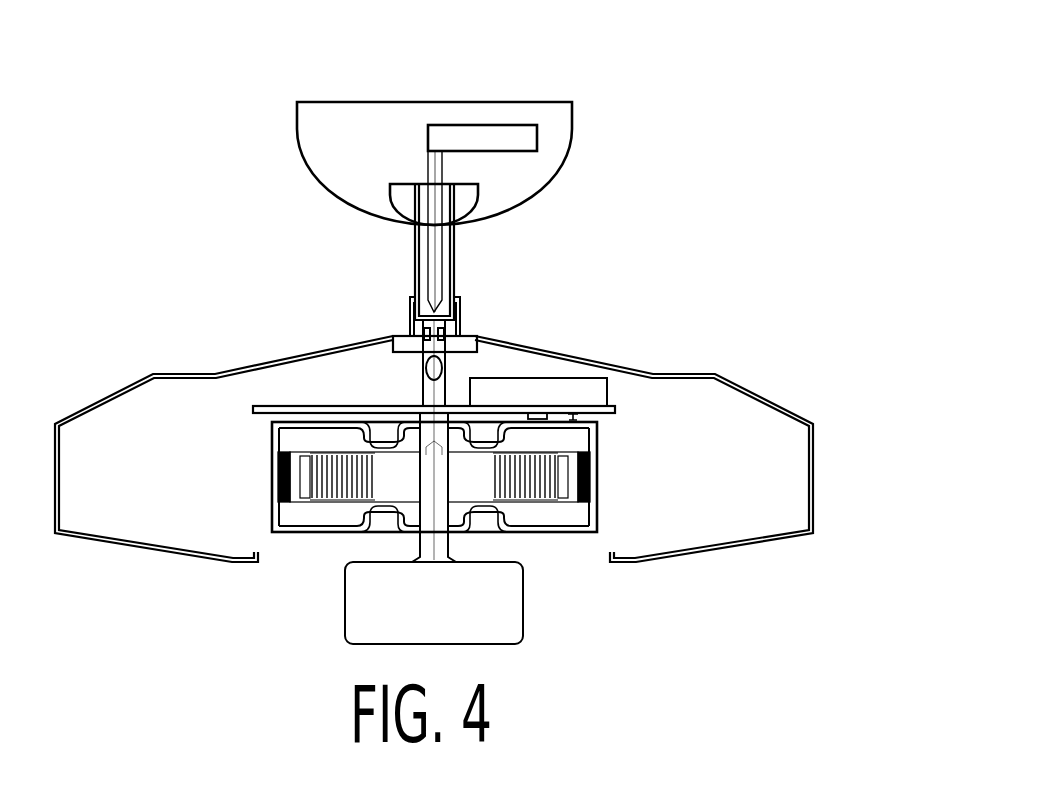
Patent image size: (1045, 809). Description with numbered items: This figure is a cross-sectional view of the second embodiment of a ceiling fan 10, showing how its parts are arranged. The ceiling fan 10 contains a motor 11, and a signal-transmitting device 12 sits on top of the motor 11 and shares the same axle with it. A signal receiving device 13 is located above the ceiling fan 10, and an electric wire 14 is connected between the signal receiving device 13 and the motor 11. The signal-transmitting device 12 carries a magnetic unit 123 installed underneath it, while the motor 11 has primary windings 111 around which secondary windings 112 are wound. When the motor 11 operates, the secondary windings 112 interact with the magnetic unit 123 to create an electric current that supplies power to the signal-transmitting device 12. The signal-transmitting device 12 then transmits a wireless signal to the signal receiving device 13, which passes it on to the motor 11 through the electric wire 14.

The ceiling fan 10 is at (650, 313).
The motor 11 is at (595, 470).
The primary windings 111 is at (560, 453).
The secondary windings 112 is at (525, 503).
The signal-transmitting device 12 is at (522, 390).
The magnetic unit 123 is at (538, 413).
The signal receiving device 13 is at (477, 137).
The electric wire 14 is at (435, 275).